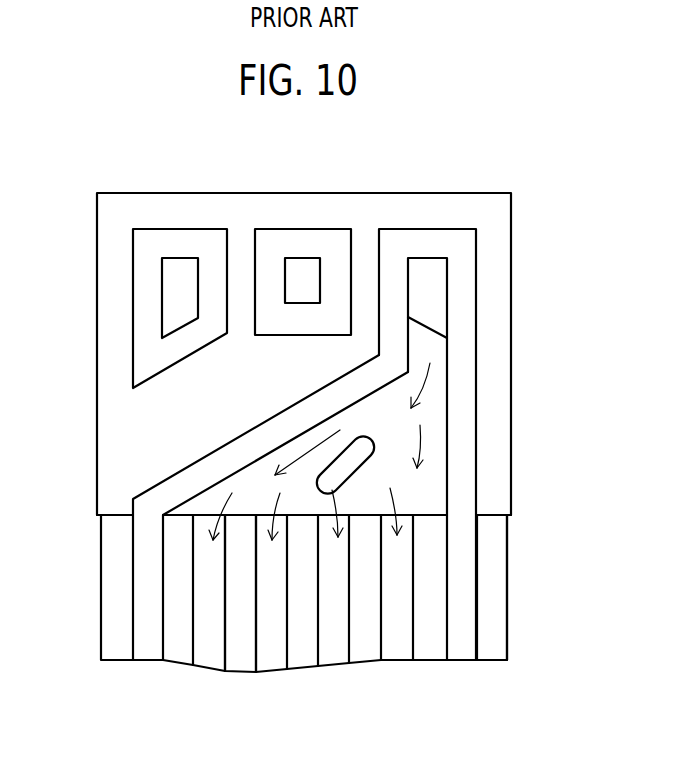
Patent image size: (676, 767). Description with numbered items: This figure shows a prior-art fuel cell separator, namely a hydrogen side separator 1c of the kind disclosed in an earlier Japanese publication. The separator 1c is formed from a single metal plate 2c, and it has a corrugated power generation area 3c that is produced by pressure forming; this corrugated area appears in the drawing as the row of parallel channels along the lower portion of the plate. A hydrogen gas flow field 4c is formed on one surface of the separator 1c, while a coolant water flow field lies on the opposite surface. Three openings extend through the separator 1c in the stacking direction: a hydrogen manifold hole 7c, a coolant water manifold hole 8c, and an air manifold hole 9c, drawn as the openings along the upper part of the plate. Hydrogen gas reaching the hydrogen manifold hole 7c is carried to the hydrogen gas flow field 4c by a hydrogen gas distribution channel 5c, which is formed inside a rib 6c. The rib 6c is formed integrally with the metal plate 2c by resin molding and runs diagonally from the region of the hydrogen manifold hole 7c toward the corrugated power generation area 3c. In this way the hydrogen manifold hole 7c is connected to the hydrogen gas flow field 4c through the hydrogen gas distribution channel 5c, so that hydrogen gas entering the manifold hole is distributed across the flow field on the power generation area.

The hydrogen side separator 1c is at (382, 134).
The metal plate 2c is at (102, 633).
The corrugated power generation area 3c is at (497, 573).
The hydrogen gas flow field 4c is at (269, 662).
The hydrogen gas distribution channel 5c is at (435, 428).
The rib 6c is at (238, 457).
The hydrogen manifold hole 7c is at (427, 290).
The coolant water manifold hole 8c is at (307, 285).
The air manifold hole 9c is at (177, 288).